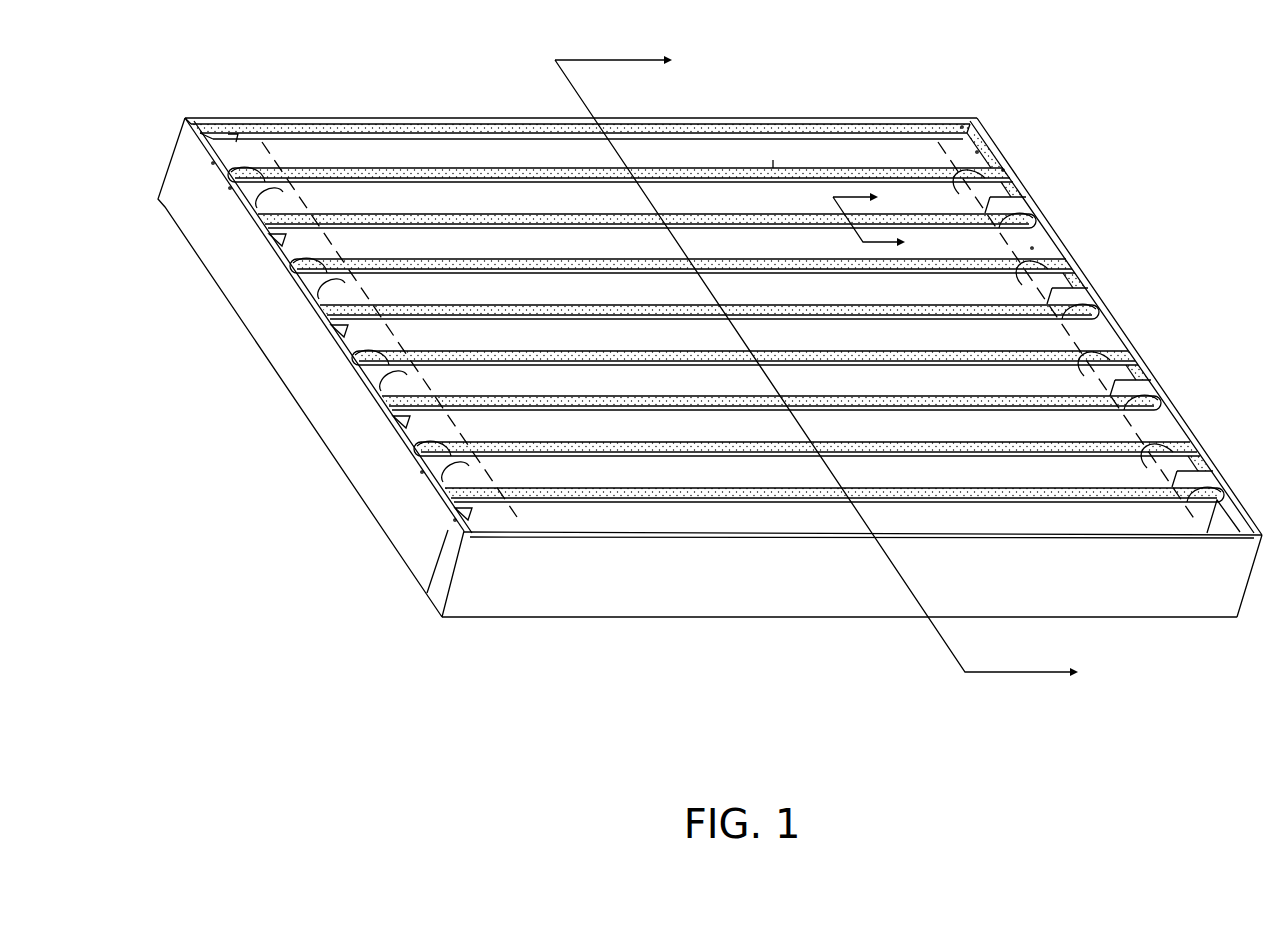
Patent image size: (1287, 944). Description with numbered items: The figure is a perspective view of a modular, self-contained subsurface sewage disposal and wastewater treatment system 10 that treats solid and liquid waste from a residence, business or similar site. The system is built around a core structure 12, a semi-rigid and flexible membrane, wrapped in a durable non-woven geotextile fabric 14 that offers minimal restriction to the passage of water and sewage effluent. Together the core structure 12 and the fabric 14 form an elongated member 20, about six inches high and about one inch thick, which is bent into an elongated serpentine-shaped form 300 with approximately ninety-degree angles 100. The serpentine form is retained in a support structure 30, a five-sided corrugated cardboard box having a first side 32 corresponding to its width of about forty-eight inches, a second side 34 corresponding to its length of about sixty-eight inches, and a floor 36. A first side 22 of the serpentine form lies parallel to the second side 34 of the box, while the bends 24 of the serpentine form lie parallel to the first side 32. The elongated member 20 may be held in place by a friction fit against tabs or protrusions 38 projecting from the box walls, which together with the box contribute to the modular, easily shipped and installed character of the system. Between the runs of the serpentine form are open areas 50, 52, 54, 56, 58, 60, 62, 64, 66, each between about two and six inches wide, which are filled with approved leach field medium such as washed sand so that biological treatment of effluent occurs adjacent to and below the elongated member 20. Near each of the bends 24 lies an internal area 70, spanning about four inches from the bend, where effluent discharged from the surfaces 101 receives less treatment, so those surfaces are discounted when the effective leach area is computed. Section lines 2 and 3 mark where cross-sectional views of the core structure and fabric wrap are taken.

The subsurface sewage disposal/wastewater treatment system 10 is at (210, 519).
The core structure 12 is at (962, 125).
The fabric 14 is at (885, 150).
The elongated member 20 is at (775, 168).
The first side of serpentine form 22 is at (505, 127).
The bends 24 is at (980, 148).
The support structure 30 is at (248, 112).
The first side 32 is at (1012, 185).
The second side 34 is at (318, 118).
The floor 36 is at (480, 620).
The tabs or protrusions 38 is at (236, 130).
The open area 50 is at (323, 164).
The open area 52 is at (353, 209).
The open area 54 is at (393, 254).
The open area 56 is at (418, 301).
The open area 58 is at (448, 347).
The open area 60 is at (483, 392).
The open area 62 is at (506, 437).
The open area 64 is at (538, 482).
The open area 66 is at (569, 528).
The internal area 70 is at (270, 228).
The ninety-degree angles 100 is at (962, 127).
The surfaces 101 is at (980, 148).
The serpentine-shaped form 300 is at (388, 134).
The section line 2- 2 is at (728, 331).
The section line 3- 3 is at (826, 366).